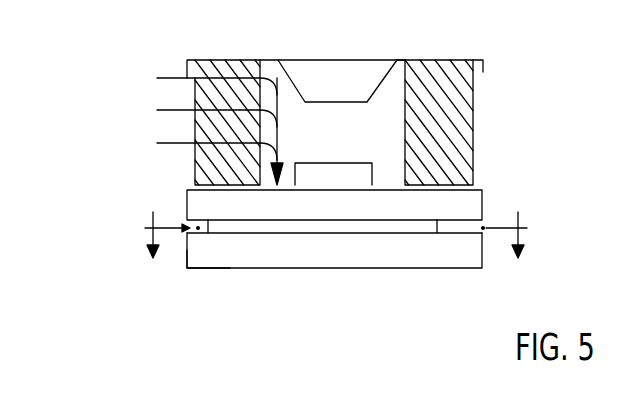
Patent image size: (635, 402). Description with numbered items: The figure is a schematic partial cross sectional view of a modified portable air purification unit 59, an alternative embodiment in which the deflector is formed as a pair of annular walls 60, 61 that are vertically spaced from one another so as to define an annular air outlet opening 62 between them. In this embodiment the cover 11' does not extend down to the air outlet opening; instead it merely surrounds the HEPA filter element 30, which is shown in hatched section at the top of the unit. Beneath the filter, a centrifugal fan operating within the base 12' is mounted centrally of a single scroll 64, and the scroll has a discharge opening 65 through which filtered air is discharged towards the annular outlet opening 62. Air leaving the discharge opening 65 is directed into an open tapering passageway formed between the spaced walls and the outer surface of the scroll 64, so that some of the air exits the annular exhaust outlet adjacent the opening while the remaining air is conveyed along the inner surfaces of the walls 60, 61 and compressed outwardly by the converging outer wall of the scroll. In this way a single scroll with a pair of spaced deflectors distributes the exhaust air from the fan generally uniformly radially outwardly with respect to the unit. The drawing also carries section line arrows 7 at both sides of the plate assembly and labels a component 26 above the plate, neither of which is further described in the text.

The cover 11' is at (409, 33).
The HEPA filter element 30 is at (462, 120).
The sample chip 26 is at (349, 130).
The modified portable air purification unit 59 is at (183, 162).
The annular wall 60 is at (476, 198).
The section line 7- 7 is at (336, 220).
The annular air outlet opening 62 is at (191, 232).
The single scroll 64 is at (265, 229).
The discharge opening 65 is at (470, 230).
The annular wall 61 is at (472, 252).
The base 12' is at (183, 286).